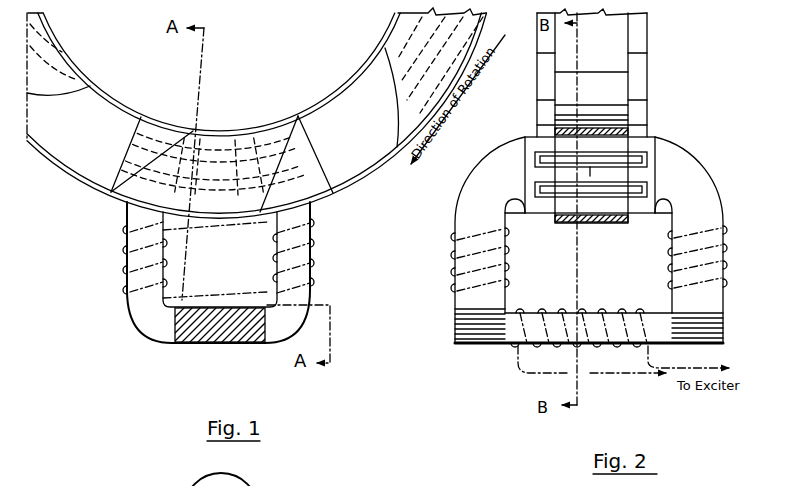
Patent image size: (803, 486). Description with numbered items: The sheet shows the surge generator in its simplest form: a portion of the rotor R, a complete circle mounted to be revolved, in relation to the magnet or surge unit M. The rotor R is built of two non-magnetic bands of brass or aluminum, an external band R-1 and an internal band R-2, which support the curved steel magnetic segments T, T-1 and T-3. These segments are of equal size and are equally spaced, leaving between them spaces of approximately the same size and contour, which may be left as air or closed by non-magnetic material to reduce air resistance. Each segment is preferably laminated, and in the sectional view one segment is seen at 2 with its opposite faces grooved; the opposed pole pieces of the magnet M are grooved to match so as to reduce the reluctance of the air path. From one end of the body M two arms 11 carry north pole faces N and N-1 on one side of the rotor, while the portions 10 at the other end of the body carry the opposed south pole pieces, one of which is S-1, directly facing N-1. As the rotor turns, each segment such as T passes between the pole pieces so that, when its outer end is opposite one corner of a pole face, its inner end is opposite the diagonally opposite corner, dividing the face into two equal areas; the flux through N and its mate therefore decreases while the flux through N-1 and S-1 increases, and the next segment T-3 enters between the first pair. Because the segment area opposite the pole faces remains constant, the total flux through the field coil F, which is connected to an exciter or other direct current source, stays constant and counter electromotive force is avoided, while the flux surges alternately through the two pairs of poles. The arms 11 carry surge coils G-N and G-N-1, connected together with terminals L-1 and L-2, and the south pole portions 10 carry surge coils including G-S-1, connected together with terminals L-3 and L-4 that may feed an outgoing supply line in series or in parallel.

In FIG. 1, the rotor R is at (257, 113).
In FIG. 2, the rotor R is at (611, 127).
In FIG. 1, the external band R-1 is at (345, 191).
In FIG. 2, the external band R-1 is at (592, 229).
In FIG. 1, the internal band R-2 is at (323, 98).
In FIG. 2, the internal band R-2 is at (604, 126).
In FIG. 1, the magnetic segment T is at (213, 164).
In FIG. 1, the magnetic segment T-1 is at (58, 59).
In FIG. 1, the magnetic segment T-3 is at (434, 82).
In FIG. 1, the north pole piece N is at (296, 164).
In FIG. 1, the north pole piece N-1 is at (152, 154).
In FIG. 2, the north pole piece N-1 is at (483, 252).
In FIG. 2, the south pole piece S-1 is at (697, 251).
In FIG. 1, the arm 11 is at (124, 216).
In FIG. 2, the arm 11 is at (454, 231).
In FIG. 2, the pole piece portion 10 is at (727, 207).
In FIG. 2, the rotor segment cross section 2 is at (553, 192).
In FIG. 1, the surge coil G-N is at (285, 291).
In FIG. 1, the surge coil G-N-1 is at (140, 297).
In FIG. 2, the surge coil G-N-1 is at (681, 223).
In FIG. 2, the surge coil G-S-1 is at (463, 224).
In FIG. 1, the terminal L-1 is at (167, 230).
In FIG. 2, the terminal L-1 is at (453, 222).
In FIG. 1, the terminal L-2 is at (182, 284).
In FIG. 2, the terminal L-2 is at (508, 298).
In FIG. 2, the terminal L-3 is at (672, 222).
In FIG. 2, the terminal L-4 is at (672, 296).
In FIG. 1, the magnet or surge unit M is at (223, 325).
In FIG. 2, the magnet or surge unit M is at (592, 311).
In FIG. 2, the field coil F is at (527, 334).